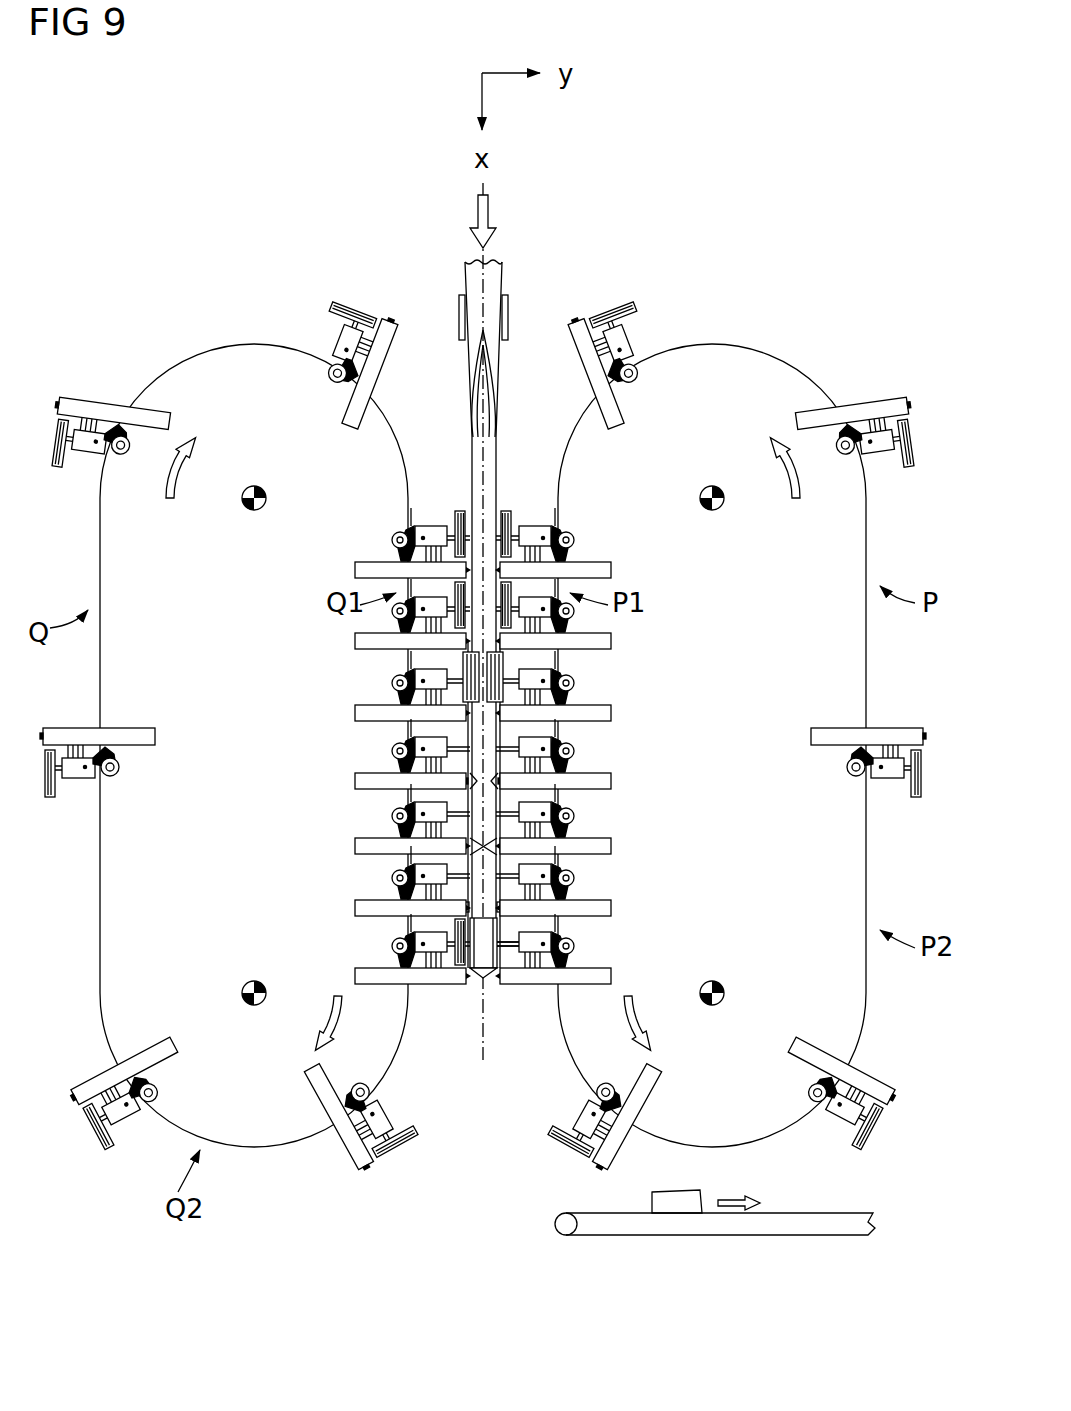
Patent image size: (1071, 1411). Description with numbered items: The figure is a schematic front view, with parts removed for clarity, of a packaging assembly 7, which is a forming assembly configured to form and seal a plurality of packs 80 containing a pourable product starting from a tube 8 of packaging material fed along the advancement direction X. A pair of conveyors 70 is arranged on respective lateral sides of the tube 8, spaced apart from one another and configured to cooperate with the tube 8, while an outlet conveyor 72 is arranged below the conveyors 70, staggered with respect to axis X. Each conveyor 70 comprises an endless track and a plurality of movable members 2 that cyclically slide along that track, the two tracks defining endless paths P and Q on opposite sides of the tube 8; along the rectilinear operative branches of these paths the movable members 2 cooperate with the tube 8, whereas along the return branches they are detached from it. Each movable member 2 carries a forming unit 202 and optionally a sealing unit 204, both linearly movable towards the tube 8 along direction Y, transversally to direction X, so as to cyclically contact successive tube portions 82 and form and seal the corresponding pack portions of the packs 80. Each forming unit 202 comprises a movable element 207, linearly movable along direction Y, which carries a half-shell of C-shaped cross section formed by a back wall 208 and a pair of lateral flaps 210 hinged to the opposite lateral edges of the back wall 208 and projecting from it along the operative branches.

The movable member 2 is at (110, 382).
The packaging assembly 7 is at (246, 180).
The tube 8 is at (497, 275).
The conveyor 70 is at (195, 322).
The outlet conveyor 72 is at (758, 1248).
The pack 80 is at (475, 968).
The tube portion 82 is at (486, 502).
The forming unit 202 is at (423, 675).
The sealing unit 204 is at (356, 714).
The movable element 207 is at (507, 955).
The back wall 208 is at (455, 520).
The lateral flap 210 is at (490, 660).